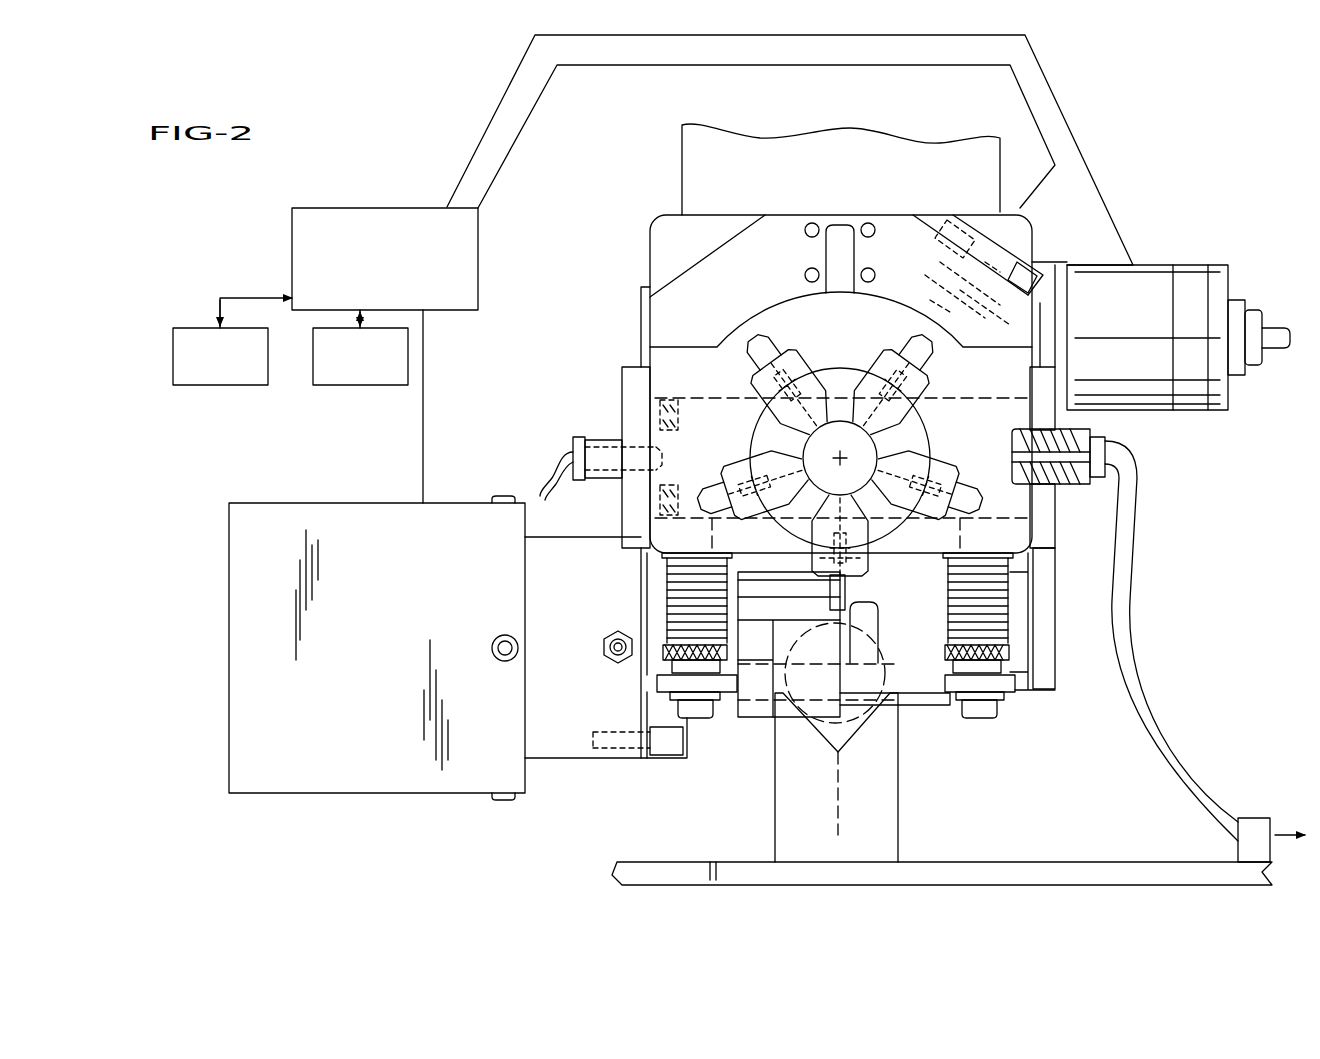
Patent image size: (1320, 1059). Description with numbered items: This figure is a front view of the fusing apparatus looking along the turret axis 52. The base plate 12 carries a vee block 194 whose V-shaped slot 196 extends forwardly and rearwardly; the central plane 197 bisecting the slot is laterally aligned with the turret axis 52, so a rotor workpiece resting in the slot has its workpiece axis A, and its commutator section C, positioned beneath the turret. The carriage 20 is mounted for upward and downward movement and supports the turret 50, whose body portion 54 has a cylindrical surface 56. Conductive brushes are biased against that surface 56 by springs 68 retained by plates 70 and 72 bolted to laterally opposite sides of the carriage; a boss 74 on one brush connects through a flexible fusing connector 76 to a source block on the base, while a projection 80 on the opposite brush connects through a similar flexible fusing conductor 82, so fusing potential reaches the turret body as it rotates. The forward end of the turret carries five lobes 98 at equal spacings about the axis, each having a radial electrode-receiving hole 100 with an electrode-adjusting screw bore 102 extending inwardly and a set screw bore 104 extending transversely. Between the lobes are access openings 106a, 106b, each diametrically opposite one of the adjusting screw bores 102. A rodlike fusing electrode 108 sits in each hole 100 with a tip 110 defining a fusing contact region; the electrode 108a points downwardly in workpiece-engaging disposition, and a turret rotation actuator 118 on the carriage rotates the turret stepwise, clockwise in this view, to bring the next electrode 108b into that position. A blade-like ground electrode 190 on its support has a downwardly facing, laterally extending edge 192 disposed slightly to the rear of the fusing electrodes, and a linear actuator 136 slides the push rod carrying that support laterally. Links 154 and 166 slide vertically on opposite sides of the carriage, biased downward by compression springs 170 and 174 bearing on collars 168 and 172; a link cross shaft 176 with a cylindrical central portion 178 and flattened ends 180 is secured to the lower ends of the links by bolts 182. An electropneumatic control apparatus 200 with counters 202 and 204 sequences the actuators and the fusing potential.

The plate 12 is at (985, 862).
The carriage 20 is at (680, 340).
The turret 50 is at (786, 343).
The turret axis 52 is at (870, 450).
The body portion 54 is at (934, 396).
The cylindrical surface 56 is at (876, 360).
The springs 68 is at (681, 490).
The plate 70 is at (1045, 536).
The plate 72 is at (622, 392).
The boss 74 is at (1086, 484).
The flexible fusing connector 76 is at (1136, 624).
The projection 80 is at (601, 482).
The flexible fusing conductor 82 is at (573, 447).
The lobes 98 is at (890, 360).
The electrode-receiving hole 100 is at (935, 456).
The electrode-adjusting screw bore 102 is at (876, 540).
The set screw bore 104 is at (740, 365).
The access opening 106a is at (825, 378).
The access opening 106b is at (742, 402).
The fusing electrode 108 is at (770, 340).
The fusing electrode 108a is at (850, 594).
The fusing electrode 108b is at (1036, 522).
The tip 110 is at (757, 340).
The turret rotation actuator 118 is at (1150, 275).
The linear actuator 136 is at (270, 503).
The link 154 is at (1040, 572).
The second link 166 is at (655, 558).
The collar 168 is at (1010, 652).
The helical compression spring 170 is at (1010, 622).
The collar 172 is at (663, 652).
The compression spring 174 is at (663, 600).
The link cross shaft 176 is at (718, 722).
The cylindrical central portion 178 is at (918, 706).
The flattened ends 180 is at (657, 684).
The bolts 182 is at (690, 718).
The ground electrode 190 is at (766, 610).
The elongated edge 192 is at (776, 700).
The vee block 194 is at (900, 800).
The V-shaped slot 196 is at (848, 740).
The central plane 197 is at (838, 805).
The electropneumatic control apparatus 200 is at (350, 208).
The counter 202 is at (218, 386).
The counter 204 is at (345, 386).
The workpiece axis A is at (840, 684).
The commutator section C is at (828, 742).